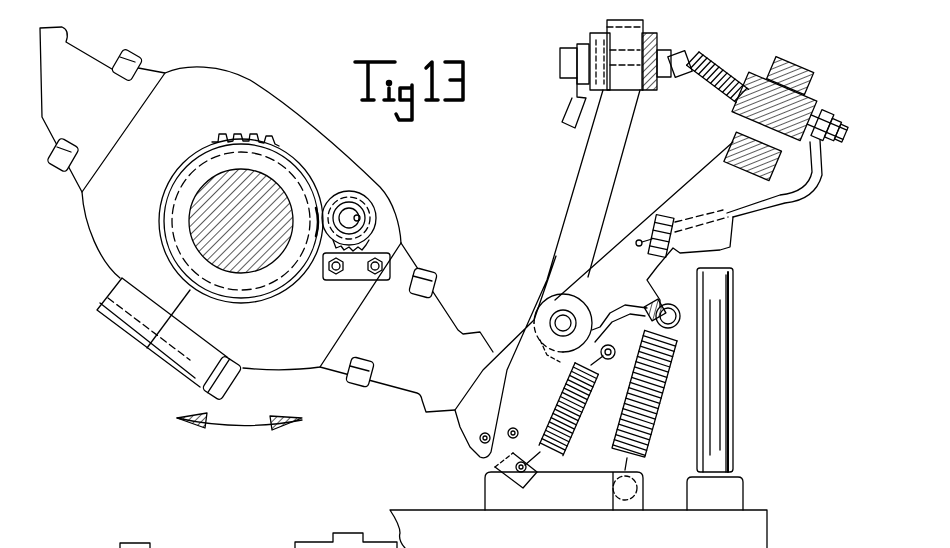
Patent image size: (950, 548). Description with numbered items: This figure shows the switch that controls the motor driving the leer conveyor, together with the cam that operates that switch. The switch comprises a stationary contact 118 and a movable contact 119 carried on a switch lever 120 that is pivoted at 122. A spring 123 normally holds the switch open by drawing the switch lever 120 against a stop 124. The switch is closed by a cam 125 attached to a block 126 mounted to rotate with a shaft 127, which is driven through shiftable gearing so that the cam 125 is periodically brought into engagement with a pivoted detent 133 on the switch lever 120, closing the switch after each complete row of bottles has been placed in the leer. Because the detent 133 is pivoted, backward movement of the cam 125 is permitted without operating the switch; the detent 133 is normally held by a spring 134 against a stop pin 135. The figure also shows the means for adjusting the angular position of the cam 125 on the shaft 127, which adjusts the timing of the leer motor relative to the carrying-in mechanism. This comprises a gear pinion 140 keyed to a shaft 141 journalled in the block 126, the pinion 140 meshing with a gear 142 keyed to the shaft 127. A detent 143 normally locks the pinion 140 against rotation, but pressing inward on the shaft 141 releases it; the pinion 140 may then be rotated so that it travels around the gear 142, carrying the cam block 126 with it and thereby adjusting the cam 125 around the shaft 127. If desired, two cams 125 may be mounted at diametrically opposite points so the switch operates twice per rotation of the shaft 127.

The stationary contact 118 is at (658, 53).
The movable contact 119 is at (688, 58).
The switch lever 120 is at (708, 164).
The pivot 122 is at (560, 325).
The spring 123 is at (651, 452).
The stop 124 is at (734, 290).
The cam 125 is at (58, 29).
The block 126 is at (398, 212).
The shaft 127 is at (191, 225).
The pivoted detent 133 is at (470, 428).
The spring 134 is at (560, 441).
The stop pin 135 is at (518, 470).
The gear pinion 140 is at (368, 234).
The shaft 141 is at (353, 208).
The gear 142 is at (275, 140).
The detent 143 is at (351, 281).